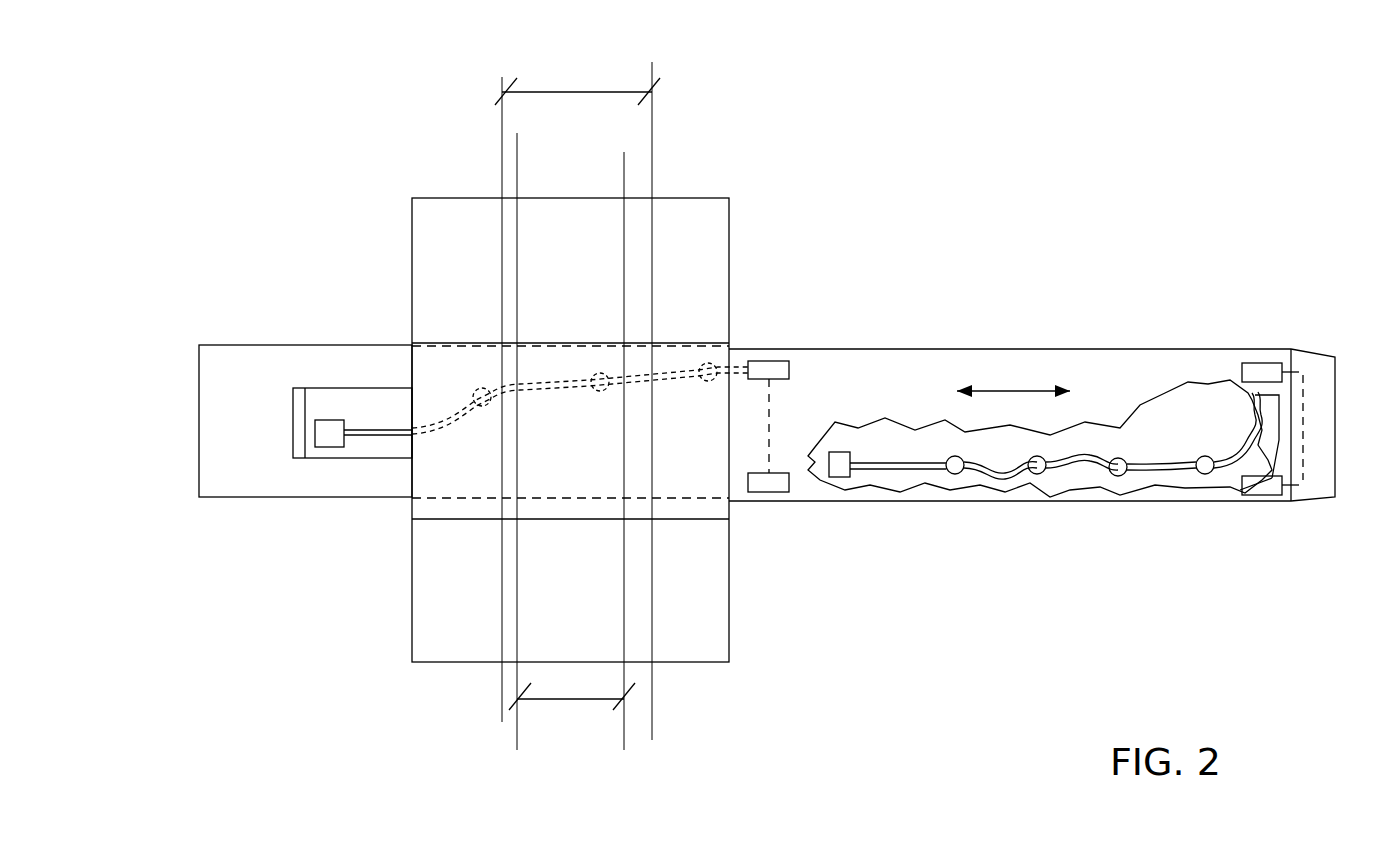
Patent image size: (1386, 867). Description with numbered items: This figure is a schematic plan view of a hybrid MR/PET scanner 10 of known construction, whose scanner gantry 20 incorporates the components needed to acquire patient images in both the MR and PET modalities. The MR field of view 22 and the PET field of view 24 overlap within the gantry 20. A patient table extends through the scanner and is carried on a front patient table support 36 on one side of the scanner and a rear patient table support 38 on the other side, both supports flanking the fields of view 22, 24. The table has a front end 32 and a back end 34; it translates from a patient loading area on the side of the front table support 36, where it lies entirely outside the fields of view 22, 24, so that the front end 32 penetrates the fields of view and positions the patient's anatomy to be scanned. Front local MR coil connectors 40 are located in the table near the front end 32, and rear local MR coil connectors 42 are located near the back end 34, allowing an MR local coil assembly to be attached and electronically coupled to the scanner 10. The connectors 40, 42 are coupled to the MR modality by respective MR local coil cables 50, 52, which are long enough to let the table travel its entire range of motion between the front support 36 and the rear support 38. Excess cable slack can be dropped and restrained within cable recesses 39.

The hybrid MR/PET scanner 10 is at (201, 528).
The scanner gantry 20 is at (432, 672).
The MR field of view 22 is at (596, 86).
The PET field of view 24 is at (564, 709).
The front end 32 is at (750, 348).
The back end 34 is at (1280, 505).
The front patient table support 36 is at (806, 286).
The rear patient table support 38 is at (284, 511).
The cable recesses 39 is at (325, 400).
The front local MR coil connectors 40 is at (782, 367).
The rear local MR coil connectors 42 is at (1258, 372).
The MR local coil cable 50 is at (509, 396).
The MR local coil cable 52 is at (1010, 480).